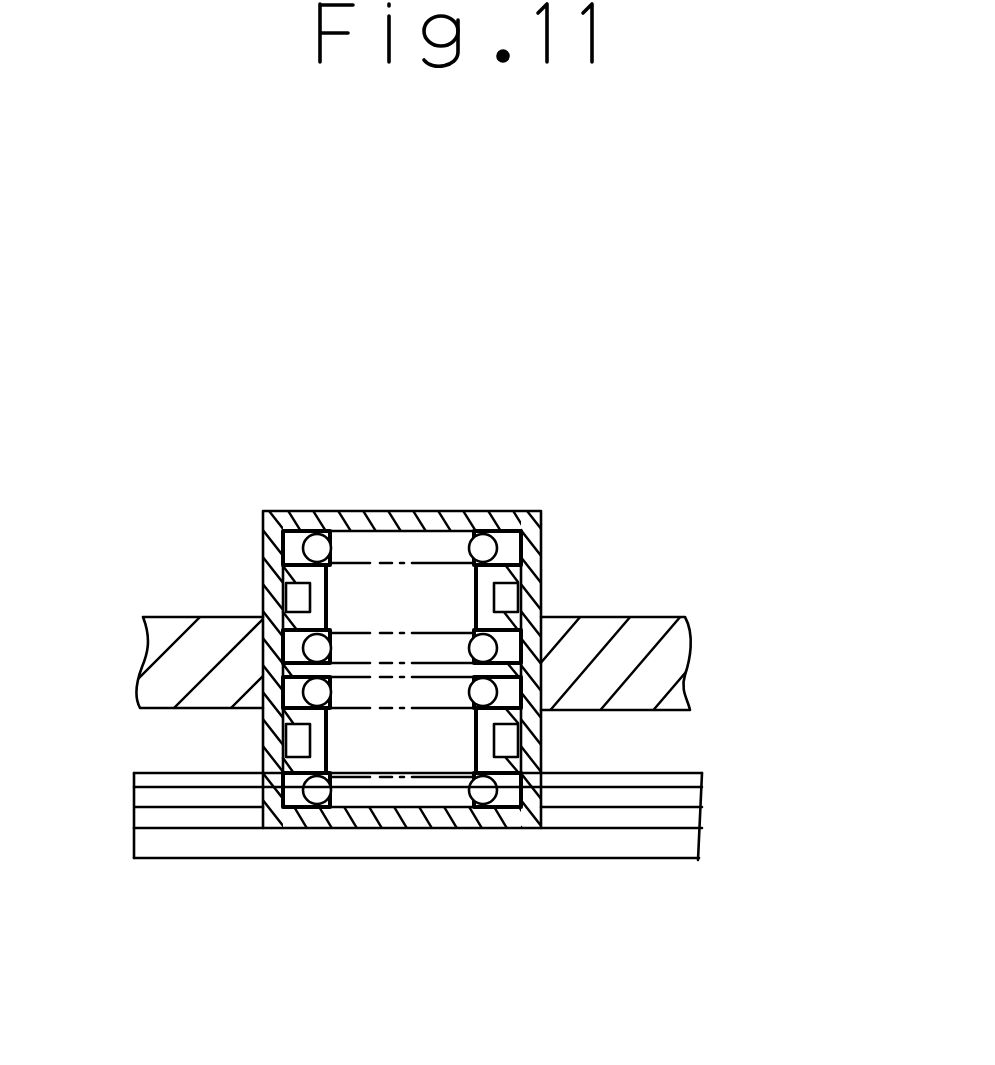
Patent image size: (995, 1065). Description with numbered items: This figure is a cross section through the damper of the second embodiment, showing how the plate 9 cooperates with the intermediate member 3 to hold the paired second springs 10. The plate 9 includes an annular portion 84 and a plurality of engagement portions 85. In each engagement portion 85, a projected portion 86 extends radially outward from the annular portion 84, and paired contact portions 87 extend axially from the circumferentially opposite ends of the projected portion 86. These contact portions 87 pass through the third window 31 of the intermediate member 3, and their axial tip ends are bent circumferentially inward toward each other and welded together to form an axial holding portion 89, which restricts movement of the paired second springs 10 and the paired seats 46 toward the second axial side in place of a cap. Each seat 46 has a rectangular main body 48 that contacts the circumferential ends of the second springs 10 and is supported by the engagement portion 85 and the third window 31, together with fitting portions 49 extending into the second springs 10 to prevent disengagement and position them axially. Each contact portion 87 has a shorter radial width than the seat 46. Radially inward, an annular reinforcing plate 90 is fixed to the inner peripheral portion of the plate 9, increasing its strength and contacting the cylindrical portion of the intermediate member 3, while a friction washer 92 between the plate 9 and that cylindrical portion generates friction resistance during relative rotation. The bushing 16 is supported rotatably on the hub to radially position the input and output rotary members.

The intermediate member 3 is at (647, 638).
The plate 9 is at (208, 987).
The second spring 10 is at (311, 545).
The bushing 16 is at (382, 843).
The third window 31 is at (547, 733).
The seat 46 is at (460, 618).
The main body 48 is at (530, 612).
The fitting portion 49 is at (478, 582).
The annular portion 84 is at (657, 815).
The engagement portion 85 is at (727, 413).
The projected portion 86 is at (435, 820).
The contact portion 87 is at (260, 667).
The axial holding portion 89 is at (343, 511).
The reinforcing plate 90 is at (687, 793).
The friction washer 92 is at (655, 773).